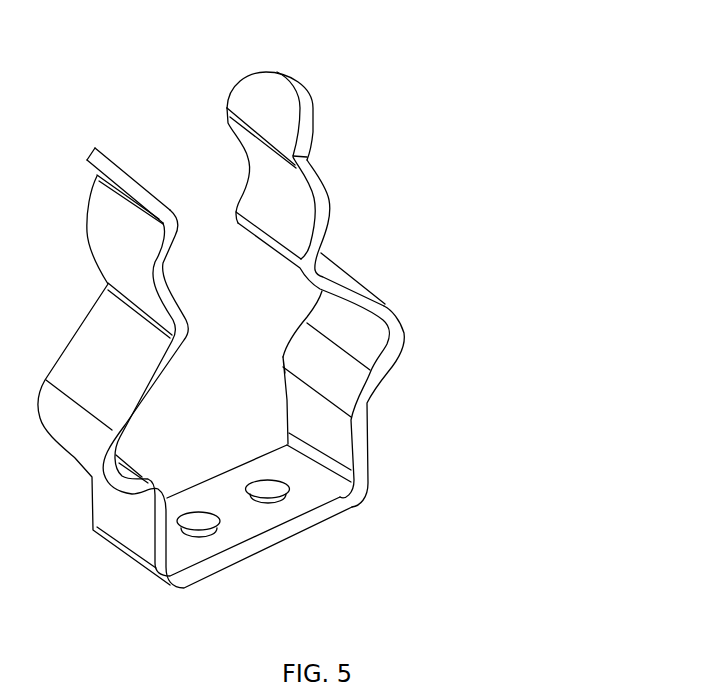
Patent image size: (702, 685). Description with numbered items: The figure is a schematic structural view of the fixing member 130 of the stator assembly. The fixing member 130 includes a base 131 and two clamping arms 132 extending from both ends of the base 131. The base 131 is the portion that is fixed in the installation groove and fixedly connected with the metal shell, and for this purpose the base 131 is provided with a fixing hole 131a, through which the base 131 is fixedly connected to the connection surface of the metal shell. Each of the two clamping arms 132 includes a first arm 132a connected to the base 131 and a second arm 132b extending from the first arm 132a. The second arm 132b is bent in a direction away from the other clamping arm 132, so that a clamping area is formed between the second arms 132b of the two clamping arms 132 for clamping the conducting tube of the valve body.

The fixing member 130 is at (200, 50).
The base 131 is at (240, 552).
The fixing hole 131a is at (267, 500).
The clamping arm 132 is at (503, 190).
The first arm 132a is at (384, 312).
The second arm 132b is at (323, 223).